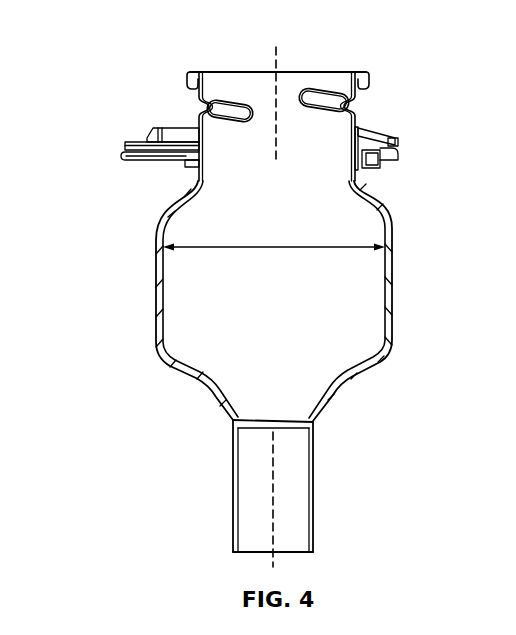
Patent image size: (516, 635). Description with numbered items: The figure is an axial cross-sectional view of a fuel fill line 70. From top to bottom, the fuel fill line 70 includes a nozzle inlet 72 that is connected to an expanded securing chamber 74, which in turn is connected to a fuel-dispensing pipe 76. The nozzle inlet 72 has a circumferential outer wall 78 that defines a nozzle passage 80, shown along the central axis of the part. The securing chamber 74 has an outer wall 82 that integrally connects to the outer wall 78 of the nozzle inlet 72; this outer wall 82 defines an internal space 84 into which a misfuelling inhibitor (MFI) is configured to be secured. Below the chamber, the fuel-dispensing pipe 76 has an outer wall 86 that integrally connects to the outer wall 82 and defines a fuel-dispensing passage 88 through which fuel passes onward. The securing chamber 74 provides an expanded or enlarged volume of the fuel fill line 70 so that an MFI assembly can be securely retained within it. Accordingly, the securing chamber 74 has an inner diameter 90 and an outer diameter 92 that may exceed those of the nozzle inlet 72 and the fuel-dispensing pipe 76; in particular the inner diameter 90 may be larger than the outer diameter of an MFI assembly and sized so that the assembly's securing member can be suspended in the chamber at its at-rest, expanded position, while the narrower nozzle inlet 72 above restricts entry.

The fuel fill line 70 is at (82, 275).
The nozzle inlet 72 is at (361, 70).
The expanded securing chamber 74 is at (393, 282).
The fuel-dispensing pipe 76 is at (315, 467).
The circumferential outer wall 78 is at (197, 122).
The nozzle passage 80 is at (268, 84).
The outer wall 82 is at (155, 325).
The internal space 84 is at (353, 317).
The outer wall 86 is at (232, 512).
The fuel-dispensing passage 88 is at (293, 508).
The inner diameter 90 is at (273, 249).
The outer diameter 92 is at (143, 243).